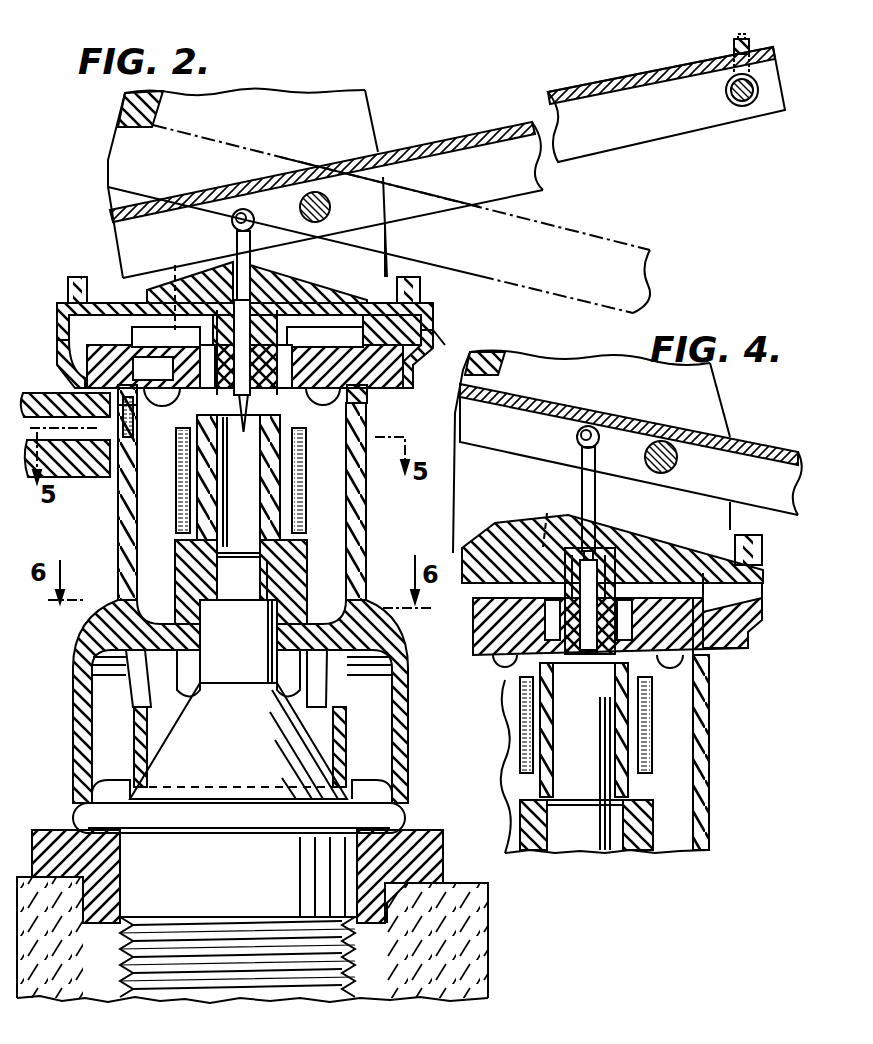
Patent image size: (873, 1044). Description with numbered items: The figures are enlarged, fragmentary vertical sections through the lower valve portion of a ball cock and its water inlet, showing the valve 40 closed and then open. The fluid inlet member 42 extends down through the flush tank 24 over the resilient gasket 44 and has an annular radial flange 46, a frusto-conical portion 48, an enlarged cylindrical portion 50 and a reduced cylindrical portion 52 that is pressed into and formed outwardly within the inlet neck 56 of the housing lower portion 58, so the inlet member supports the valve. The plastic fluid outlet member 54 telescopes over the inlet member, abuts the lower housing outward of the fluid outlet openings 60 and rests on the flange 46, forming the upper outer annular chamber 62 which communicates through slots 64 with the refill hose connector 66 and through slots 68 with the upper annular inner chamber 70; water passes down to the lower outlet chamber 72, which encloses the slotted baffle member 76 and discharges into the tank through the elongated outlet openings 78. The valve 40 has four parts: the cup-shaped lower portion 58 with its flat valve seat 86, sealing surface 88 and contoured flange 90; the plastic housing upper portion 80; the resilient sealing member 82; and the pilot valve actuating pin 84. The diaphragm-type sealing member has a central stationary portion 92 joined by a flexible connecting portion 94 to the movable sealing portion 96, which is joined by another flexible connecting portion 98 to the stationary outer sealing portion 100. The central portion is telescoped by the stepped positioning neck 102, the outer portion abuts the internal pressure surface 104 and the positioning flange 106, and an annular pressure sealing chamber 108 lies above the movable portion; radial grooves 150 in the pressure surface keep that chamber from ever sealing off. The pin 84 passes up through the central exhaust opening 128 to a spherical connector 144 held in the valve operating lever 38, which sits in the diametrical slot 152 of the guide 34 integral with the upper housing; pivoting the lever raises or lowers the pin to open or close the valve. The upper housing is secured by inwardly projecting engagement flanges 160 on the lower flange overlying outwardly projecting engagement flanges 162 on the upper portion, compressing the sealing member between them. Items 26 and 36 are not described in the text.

In FIG. 2, the flush tank 24 is at (455, 947).
In FIG. 2, the inlet port 26 is at (57, 387).
In FIG. 2, the guide 34 is at (357, 107).
In FIG. 4, the guide 34 is at (697, 393).
In FIG. 2, the screw 36 is at (734, 46).
In FIG. 2, the valve operating lever 38 is at (525, 190).
In FIG. 4, the valve operating lever 38 is at (745, 465).
In FIG. 2, the valve 40 is at (78, 275).
In FIG. 4, the valve 40 is at (750, 677).
In FIG. 2, the fluid inlet member 42 is at (133, 1000).
In FIG. 4, the fluid inlet member 42 is at (593, 833).
In FIG. 2, the resilient gasket 44 is at (62, 823).
In FIG. 2, the annular radial flange 46 is at (95, 800).
In FIG. 2, the frusto-conical portion 48 is at (182, 750).
In FIG. 2, the enlarged cylindrical portion 50 is at (238, 621).
In FIG. 4, the enlarged cylindrical portion 50 is at (570, 833).
In FIG. 2, the reduced cylindrical portion 52 is at (212, 515).
In FIG. 4, the reduced cylindrical portion 52 is at (600, 747).
In FIG. 2, the fluid outlet member 54 is at (83, 648).
In FIG. 4, the fluid outlet member 54 is at (697, 810).
In FIG. 2, the inlet neck 56 is at (360, 490).
In FIG. 4, the inlet neck 56 is at (623, 767).
In FIG. 2, the housing lower portion 58 is at (58, 322).
In FIG. 4, the housing lower portion 58 is at (750, 638).
In FIG. 2, the fluid outlet openings 60 is at (160, 420).
In FIG. 4, the fluid outlet openings 60 is at (507, 677).
In FIG. 2, the upper outer annular chamber 62 is at (150, 515).
In FIG. 4, the upper outer annular chamber 62 is at (670, 833).
In FIG. 2, the slots 64 is at (122, 493).
In FIG. 2, the refill hose connector 66 is at (85, 450).
In FIG. 2, the slots 68 is at (300, 520).
In FIG. 4, the slots 68 is at (530, 753).
In FIG. 2, the upper annular inner chamber 70 is at (287, 503).
In FIG. 4, the upper annular inner chamber 70 is at (537, 727).
In FIG. 2, the lower outlet chamber 72 is at (107, 703).
In FIG. 2, the slotted baffle member 76 is at (140, 753).
In FIG. 2, the elongated outlet openings 78 is at (365, 793).
In FIG. 2, the housing upper portion 80 is at (113, 300).
In FIG. 4, the housing upper portion 80 is at (512, 540).
In FIG. 2, the resilient material sealing member 82 is at (370, 405).
In FIG. 4, the resilient material sealing member 82 is at (473, 620).
In FIG. 2, the pilot valve actuating pin 84 is at (237, 233).
In FIG. 4, the pilot valve actuating pin 84 is at (582, 478).
In FIG. 2, the valve seat 86 is at (292, 430).
In FIG. 4, the valve seat 86 is at (493, 670).
In FIG. 2, the sealing surface 88 is at (398, 396).
In FIG. 4, the sealing surface 88 is at (745, 660).
In FIG. 2, the flange 90 is at (436, 342).
In FIG. 4, the flange 90 is at (762, 610).
In FIG. 2, the central stationary portion 92 is at (268, 296).
In FIG. 4, the central stationary portion 92 is at (560, 655).
In FIG. 2, the flexible connecting portion 94 is at (242, 436).
In FIG. 4, the flexible connecting portion 94 is at (550, 673).
In FIG. 2, the movable sealing portion 96 is at (330, 327).
In FIG. 4, the movable sealing portion 96 is at (675, 598).
In FIG. 2, the flexible connecting portion 98 is at (380, 318).
In FIG. 4, the flexible connecting portion 98 is at (712, 655).
In FIG. 2, the stationary outer sealing portion 100 is at (387, 300).
In FIG. 4, the stationary outer sealing portion 100 is at (703, 573).
In FIG. 2, the stepped positioning neck 102 is at (222, 300).
In FIG. 4, the stepped positioning neck 102 is at (610, 550).
In FIG. 2, the internal pressure surface 104 is at (152, 327).
In FIG. 4, the internal pressure surface 104 is at (670, 553).
In FIG. 2, the positioning flange 106 is at (87, 355).
In FIG. 4, the positioning flange 106 is at (748, 640).
In FIG. 2, the pressure sealing chamber 108 is at (176, 356).
In FIG. 2, the central exhaust opening 128 is at (257, 283).
In FIG. 4, the central exhaust opening 128 is at (597, 537).
In FIG. 2, the spherical connector 144 is at (250, 212).
In FIG. 4, the spherical connector 144 is at (577, 435).
In FIG. 2, the radially extending grooves 150 is at (172, 285).
In FIG. 4, the radially extending grooves 150 is at (541, 517).
In FIG. 2, the diametrical slot 152 is at (163, 148).
In FIG. 2, the engagement flanges 160 is at (68, 272).
In FIG. 4, the engagement flanges 160 is at (763, 537).
In FIG. 2, the engagement flanges 162 is at (62, 302).
In FIG. 4, the engagement flanges 162 is at (765, 567).